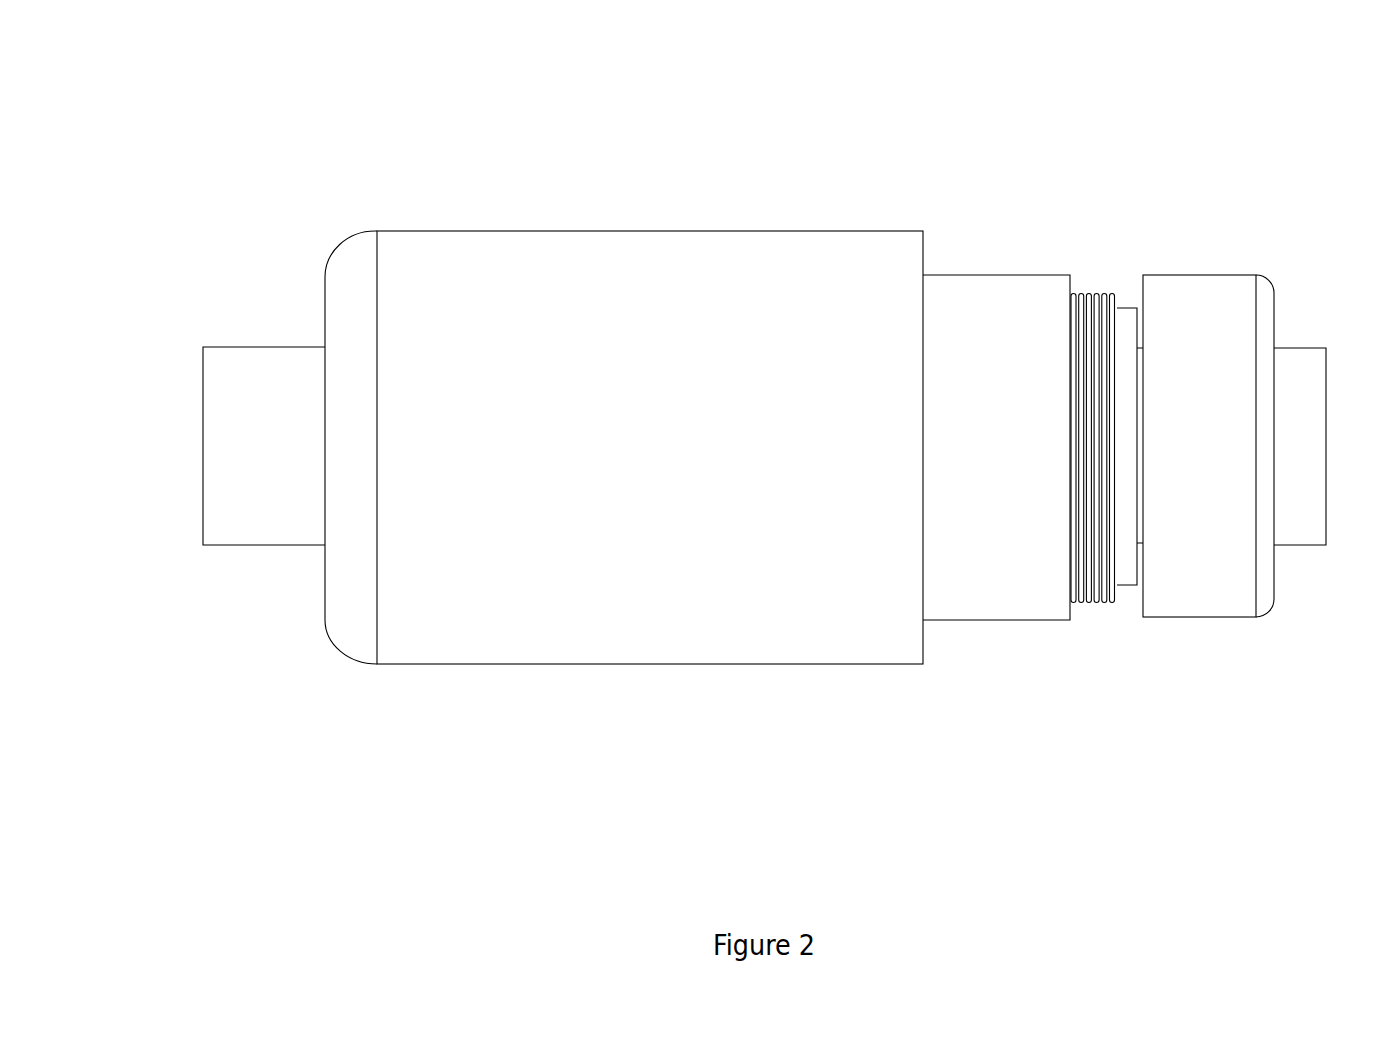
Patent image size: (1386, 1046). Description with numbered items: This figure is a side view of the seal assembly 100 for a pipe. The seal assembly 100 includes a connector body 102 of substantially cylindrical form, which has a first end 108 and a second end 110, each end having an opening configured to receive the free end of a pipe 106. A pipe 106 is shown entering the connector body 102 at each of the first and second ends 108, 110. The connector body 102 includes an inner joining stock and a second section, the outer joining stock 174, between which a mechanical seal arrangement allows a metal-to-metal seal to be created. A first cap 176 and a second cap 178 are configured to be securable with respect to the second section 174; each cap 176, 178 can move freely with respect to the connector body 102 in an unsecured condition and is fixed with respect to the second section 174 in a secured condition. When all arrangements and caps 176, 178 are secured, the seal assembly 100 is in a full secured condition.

The seal assembly 100 is at (325, 150).
The connector body 102 is at (895, 183).
The pipe 106 is at (260, 392).
The first end 108 is at (338, 497).
The second end 110 is at (1266, 598).
The second section (outer joining stock) 174 is at (965, 315).
The first cap 176 is at (594, 533).
The second cap 178 is at (1160, 315).